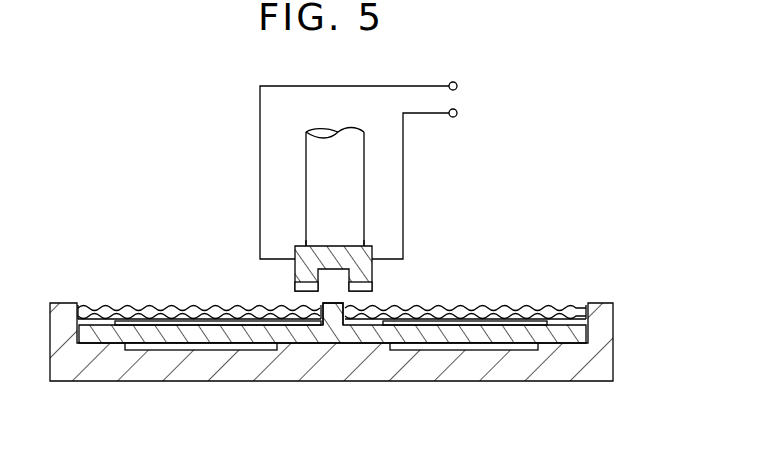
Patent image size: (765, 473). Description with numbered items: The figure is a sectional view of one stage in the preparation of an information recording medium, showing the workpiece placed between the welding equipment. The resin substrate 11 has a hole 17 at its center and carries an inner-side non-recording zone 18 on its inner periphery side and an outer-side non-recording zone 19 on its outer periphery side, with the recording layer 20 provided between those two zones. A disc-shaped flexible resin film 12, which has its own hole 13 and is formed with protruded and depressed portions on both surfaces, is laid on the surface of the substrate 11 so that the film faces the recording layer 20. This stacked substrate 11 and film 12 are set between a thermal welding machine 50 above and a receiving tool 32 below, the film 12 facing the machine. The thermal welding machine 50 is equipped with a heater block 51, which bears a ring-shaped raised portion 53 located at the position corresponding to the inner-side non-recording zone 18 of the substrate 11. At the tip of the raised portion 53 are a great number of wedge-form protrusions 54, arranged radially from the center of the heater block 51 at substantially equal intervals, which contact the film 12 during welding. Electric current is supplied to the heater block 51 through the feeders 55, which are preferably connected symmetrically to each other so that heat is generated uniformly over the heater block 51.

The resin substrate 11 is at (368, 337).
The flexible resin film 12 is at (206, 310).
The hole 13 is at (352, 308).
The hole 17 is at (333, 330).
The inner-side non-recording zone 18 is at (302, 312).
The outer-side non-recording zone 19 is at (100, 321).
The recording layer 20 is at (460, 325).
The receiving tool 32 is at (139, 373).
The thermal welding machine 50 is at (296, 222).
The heater block 51 is at (366, 246).
The ring-shaped raised portion 53 is at (372, 262).
The protrusions 54 is at (360, 292).
The feeders 55 is at (413, 85).